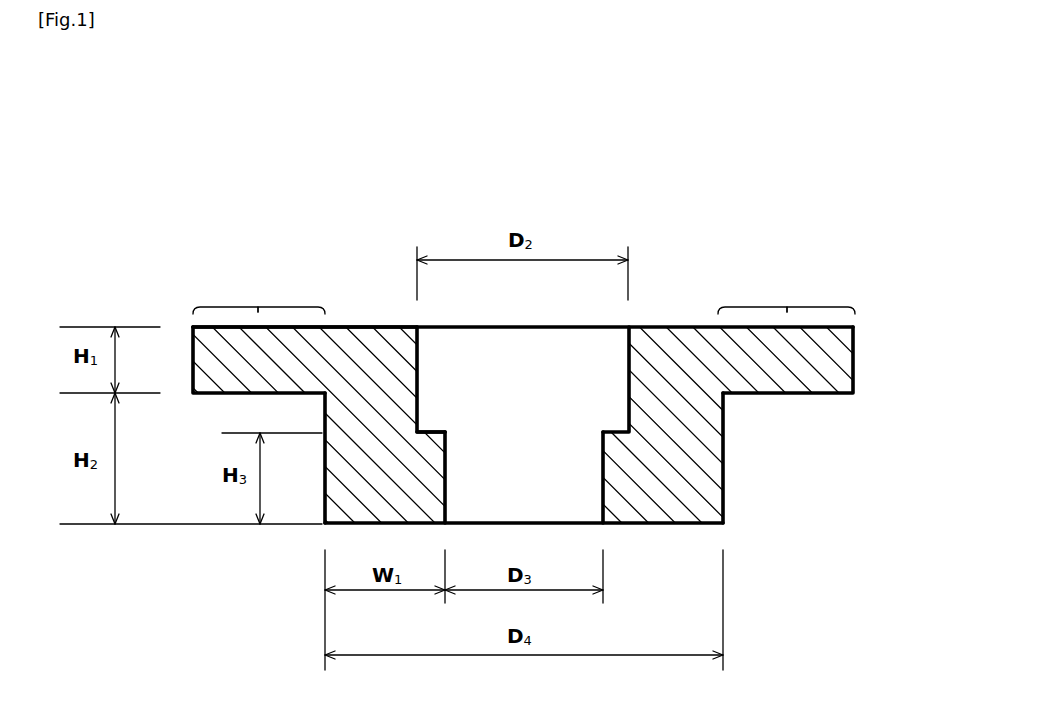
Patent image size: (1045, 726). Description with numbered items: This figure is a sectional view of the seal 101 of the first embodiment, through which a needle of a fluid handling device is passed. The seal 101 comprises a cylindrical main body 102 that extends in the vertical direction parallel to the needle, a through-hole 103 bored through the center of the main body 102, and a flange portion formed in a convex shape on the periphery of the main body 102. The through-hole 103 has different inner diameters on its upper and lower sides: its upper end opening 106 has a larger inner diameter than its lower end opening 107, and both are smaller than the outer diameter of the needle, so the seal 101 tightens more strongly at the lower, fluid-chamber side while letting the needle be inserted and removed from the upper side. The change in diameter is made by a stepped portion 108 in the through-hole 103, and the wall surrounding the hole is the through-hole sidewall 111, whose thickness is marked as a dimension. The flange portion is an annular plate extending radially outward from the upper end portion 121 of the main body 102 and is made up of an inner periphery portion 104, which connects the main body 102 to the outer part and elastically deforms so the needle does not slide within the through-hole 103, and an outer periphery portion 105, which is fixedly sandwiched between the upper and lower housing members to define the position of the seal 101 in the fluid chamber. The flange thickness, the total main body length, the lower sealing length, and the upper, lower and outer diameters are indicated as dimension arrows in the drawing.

The seal 101 is at (522, 310).
The main body 102 is at (634, 458).
The through-hole 103 is at (533, 293).
The inner periphery portion 104 is at (290, 307).
The outer periphery portion 105 is at (227, 307).
The upper end opening 106 is at (523, 233).
The lower end opening 107 is at (634, 528).
The stepped portion 108 is at (291, 419).
The through-hole sidewall 111 is at (369, 497).
The upper end portion 121 is at (321, 248).